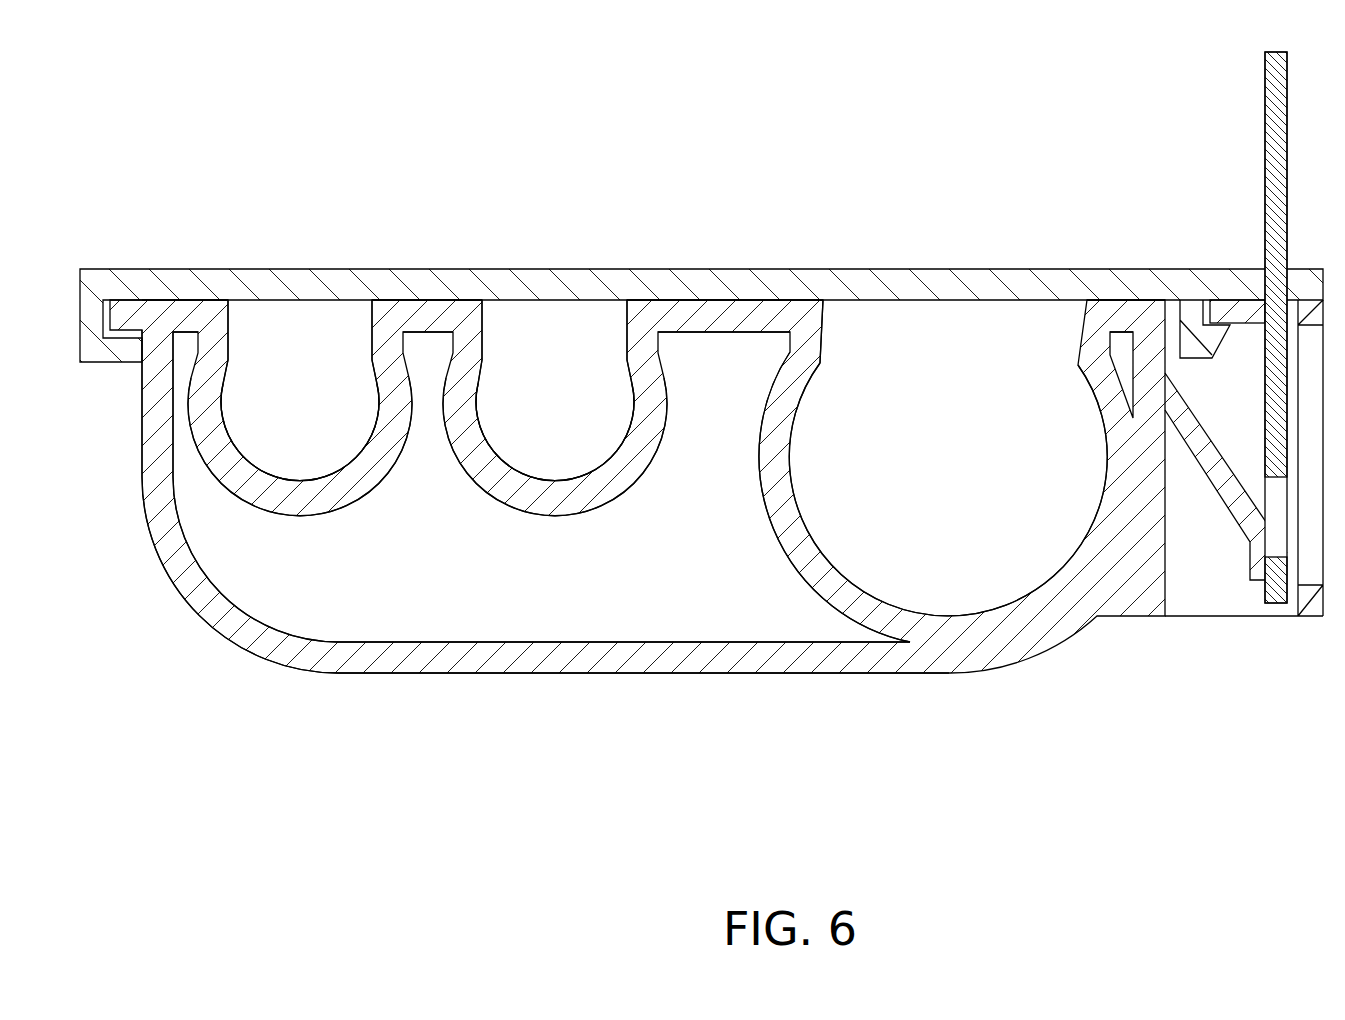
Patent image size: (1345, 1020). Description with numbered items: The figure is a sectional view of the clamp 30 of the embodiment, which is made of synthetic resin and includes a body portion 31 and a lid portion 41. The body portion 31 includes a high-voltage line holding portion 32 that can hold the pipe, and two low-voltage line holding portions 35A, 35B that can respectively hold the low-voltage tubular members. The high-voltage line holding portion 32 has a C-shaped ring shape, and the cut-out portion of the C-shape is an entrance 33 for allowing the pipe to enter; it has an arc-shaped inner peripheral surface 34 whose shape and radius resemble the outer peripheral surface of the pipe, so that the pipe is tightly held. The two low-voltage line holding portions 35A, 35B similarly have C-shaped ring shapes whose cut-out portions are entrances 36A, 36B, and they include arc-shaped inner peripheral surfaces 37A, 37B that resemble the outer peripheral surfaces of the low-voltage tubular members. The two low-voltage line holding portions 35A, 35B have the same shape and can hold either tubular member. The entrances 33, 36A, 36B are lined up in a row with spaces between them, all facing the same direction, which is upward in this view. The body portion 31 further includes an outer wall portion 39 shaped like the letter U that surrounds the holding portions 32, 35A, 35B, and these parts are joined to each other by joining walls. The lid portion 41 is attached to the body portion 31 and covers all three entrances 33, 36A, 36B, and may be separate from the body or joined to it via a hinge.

The clamp 30 is at (701, 547).
The body portion 31 is at (1047, 698).
The lid portion 41 is at (975, 292).
The high-voltage line holding portion 32 is at (823, 587).
The entrance 33 is at (823, 330).
The arc-shaped inner peripheral surface 34 is at (840, 543).
The low-voltage line holding portion 35A is at (282, 502).
The low-voltage line holding portion 35B is at (540, 502).
The entrance 36A is at (230, 330).
The entrance 36B is at (487, 330).
The arc-shaped inner peripheral surface 37A is at (286, 460).
The arc-shaped inner peripheral surface 37B is at (561, 458).
The outer wall portion 39 is at (208, 603).